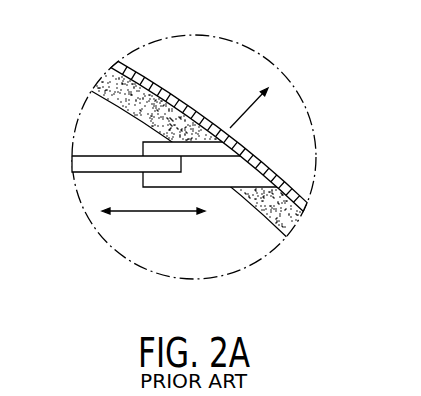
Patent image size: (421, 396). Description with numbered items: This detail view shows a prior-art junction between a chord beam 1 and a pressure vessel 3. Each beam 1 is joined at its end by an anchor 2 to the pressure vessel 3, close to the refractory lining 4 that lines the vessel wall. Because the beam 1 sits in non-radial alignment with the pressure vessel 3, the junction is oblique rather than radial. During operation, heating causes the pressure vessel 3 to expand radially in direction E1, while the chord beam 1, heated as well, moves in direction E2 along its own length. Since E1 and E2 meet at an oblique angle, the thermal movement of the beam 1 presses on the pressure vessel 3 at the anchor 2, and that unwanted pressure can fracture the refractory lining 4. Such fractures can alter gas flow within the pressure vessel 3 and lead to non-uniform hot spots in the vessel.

The chord beam 1 is at (80, 163).
The anchor 2 is at (205, 180).
The pressure vessel 3 is at (178, 97).
The refractory lining 4 is at (150, 114).
The radial expansion direction E1 is at (240, 117).
The chord beam movement direction E2 is at (152, 213).